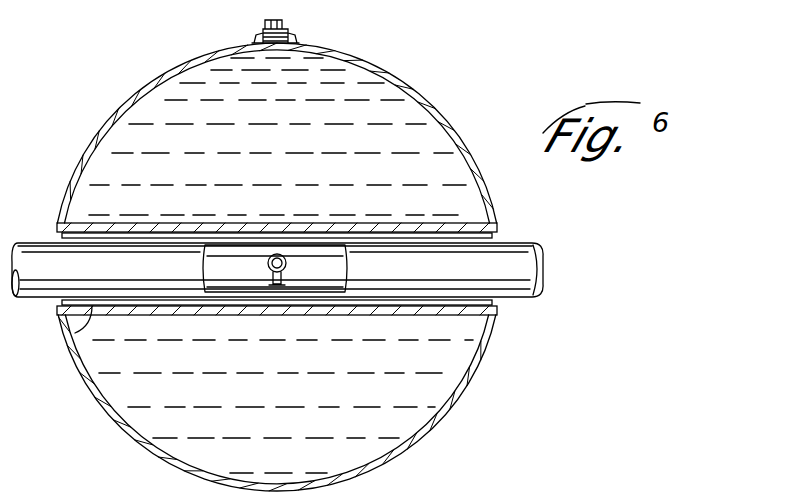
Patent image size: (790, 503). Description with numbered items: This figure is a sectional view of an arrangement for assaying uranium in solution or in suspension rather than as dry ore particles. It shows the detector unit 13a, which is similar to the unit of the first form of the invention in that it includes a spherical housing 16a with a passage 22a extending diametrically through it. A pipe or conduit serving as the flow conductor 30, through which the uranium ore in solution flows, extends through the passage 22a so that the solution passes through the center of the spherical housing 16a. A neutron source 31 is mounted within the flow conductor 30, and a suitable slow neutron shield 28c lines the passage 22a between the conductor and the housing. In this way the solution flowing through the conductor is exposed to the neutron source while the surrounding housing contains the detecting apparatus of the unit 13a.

The detector unit 13a is at (433, 103).
The spherical housing 16a is at (452, 404).
The passage 22a is at (460, 306).
The slow neutron shield 28c is at (75, 333).
The flow conductor 30 is at (523, 278).
The neutron source 31 is at (268, 268).